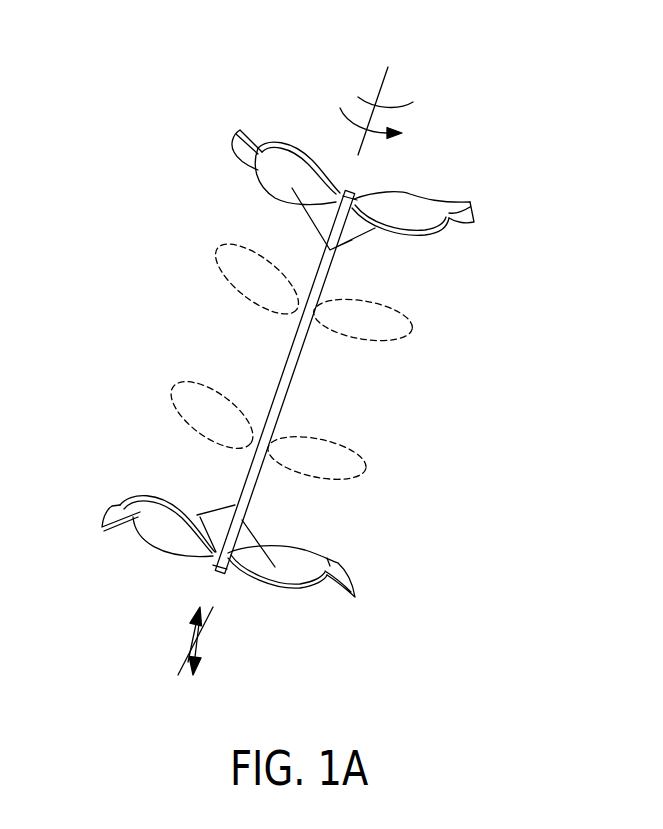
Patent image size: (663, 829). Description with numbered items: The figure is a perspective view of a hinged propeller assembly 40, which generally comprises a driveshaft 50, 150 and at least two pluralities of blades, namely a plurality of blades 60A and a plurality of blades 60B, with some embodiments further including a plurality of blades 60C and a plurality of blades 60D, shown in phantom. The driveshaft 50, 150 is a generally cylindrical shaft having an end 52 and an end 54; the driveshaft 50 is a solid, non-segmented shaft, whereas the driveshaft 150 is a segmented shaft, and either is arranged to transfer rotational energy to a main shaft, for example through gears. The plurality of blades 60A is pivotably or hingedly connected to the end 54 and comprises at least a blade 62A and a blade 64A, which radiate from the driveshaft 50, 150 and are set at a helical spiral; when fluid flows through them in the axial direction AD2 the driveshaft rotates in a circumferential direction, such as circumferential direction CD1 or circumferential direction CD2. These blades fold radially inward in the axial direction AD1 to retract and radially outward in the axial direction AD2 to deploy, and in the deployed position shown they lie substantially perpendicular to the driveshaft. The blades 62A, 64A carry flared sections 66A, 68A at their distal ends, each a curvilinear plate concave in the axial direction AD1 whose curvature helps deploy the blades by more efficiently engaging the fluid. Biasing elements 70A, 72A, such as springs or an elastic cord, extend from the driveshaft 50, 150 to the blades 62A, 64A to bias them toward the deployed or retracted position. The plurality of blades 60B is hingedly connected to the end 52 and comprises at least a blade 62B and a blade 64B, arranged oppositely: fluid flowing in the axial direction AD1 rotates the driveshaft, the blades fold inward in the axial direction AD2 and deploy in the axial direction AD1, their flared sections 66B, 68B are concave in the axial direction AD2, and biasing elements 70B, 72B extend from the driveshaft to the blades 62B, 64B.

The hinged propeller assembly 40 is at (492, 75).
The driveshaft 50 is at (308, 381).
The driveshaft 150 is at (296, 382).
The end 52 is at (217, 574).
The end 54 is at (340, 182).
The plurality of blades 60A is at (478, 183).
The plurality of blades 60B is at (398, 598).
The plurality of blades 60C is at (176, 274).
The plurality of blades 60D is at (131, 405).
The blade 62A is at (432, 233).
The blade 62B is at (297, 578).
The blade 64A is at (268, 178).
The blade 64B is at (153, 538).
The flared section 66A is at (478, 214).
The flared section 66B is at (350, 574).
The flared section 68A is at (240, 148).
The flared section 68B is at (106, 511).
The biasing element 70A is at (352, 242).
The biasing element 70B is at (240, 551).
The biasing element 72A is at (333, 198).
The biasing element 72B is at (208, 516).
The circumferential direction CD1 is at (373, 133).
The circumferential direction CD2 is at (360, 89).
The axial direction AD1 is at (185, 652).
The axial direction AD2 is at (210, 637).